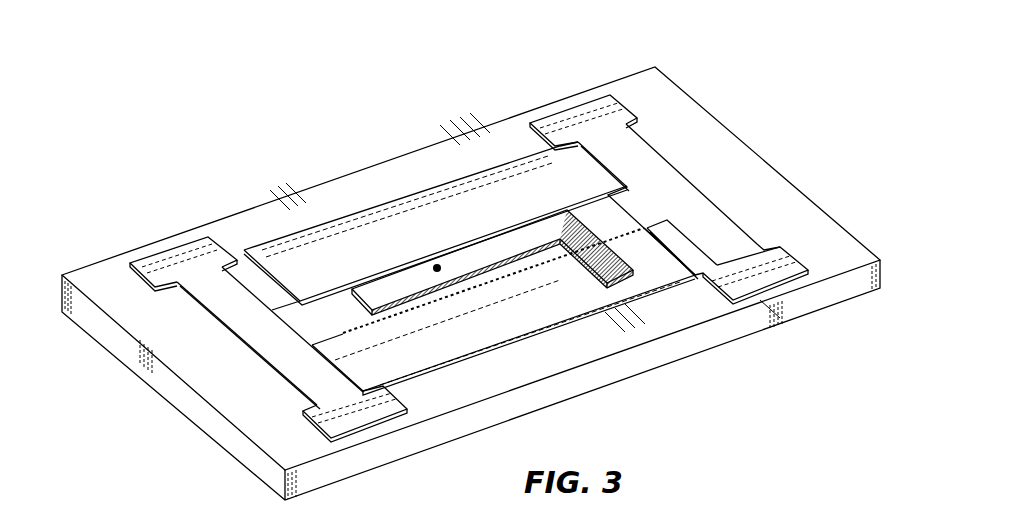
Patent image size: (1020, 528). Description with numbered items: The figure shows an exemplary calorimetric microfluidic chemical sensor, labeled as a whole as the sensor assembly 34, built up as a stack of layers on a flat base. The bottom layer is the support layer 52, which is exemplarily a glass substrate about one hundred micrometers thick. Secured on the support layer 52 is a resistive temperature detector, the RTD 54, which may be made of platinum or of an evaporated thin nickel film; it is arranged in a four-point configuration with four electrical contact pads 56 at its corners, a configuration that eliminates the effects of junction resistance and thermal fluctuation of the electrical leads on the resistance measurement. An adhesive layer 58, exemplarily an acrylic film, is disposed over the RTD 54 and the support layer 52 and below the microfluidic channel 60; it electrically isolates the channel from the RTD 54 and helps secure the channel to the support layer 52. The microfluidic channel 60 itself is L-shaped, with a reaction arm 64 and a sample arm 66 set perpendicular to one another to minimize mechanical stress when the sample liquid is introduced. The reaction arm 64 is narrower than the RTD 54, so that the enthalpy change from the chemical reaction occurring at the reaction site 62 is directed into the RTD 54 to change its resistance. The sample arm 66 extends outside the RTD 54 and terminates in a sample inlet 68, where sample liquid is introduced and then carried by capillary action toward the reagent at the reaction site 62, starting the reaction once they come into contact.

The sensor assembly 34 is at (753, 90).
The support layer 52 is at (197, 410).
The resistive temperature detector (RTD) 54 is at (253, 322).
The electrical contact pads 56 is at (190, 248).
The adhesive layer 58 is at (590, 325).
The microfluidic channel 60 is at (410, 313).
The reaction site 62 is at (437, 265).
The reaction arm 64 is at (485, 250).
The sample arm 66 is at (593, 228).
The sample inlet 68 is at (667, 222).